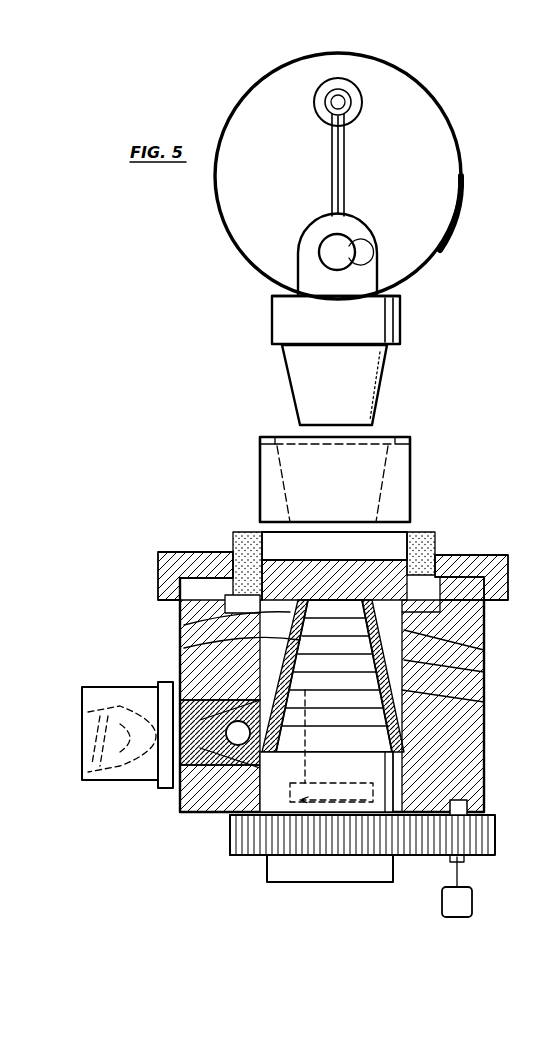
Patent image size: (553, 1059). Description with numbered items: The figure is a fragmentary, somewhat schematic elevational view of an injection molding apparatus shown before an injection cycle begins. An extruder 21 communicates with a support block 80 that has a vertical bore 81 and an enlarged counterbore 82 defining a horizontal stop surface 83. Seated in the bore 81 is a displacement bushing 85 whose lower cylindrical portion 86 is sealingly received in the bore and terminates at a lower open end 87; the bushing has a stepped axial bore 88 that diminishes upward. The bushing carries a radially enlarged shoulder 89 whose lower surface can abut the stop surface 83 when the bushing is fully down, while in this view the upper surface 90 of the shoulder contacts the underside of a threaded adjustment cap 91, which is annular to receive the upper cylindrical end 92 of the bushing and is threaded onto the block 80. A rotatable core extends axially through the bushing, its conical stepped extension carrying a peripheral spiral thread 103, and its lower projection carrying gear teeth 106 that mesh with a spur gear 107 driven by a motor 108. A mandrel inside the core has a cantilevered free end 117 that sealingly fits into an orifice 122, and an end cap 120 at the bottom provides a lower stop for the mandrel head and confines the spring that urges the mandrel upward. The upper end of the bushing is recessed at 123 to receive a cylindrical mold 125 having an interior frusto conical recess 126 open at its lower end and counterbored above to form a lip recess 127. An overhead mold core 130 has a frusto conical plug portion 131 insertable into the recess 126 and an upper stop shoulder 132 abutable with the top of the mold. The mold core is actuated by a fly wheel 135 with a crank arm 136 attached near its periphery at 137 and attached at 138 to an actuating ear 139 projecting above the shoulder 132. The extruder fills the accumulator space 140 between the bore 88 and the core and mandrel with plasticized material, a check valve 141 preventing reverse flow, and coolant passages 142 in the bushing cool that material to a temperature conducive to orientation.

The extruder 21 is at (93, 690).
The support block 80 is at (204, 813).
The vertical bore 81 is at (424, 670).
The enlarged counterbore 82 is at (438, 606).
The horizontal stop surface 83 is at (422, 618).
The displacement bushing 85 is at (426, 540).
The lower cylindrical portion 86 is at (184, 648).
The lower open end 87 is at (434, 702).
The axial bore 88 is at (184, 625).
The radially enlarged shoulder 89 is at (480, 572).
The upper surface 90 is at (214, 553).
The threaded adjustment cap 91 is at (478, 556).
The upper cylindrical end 92 is at (244, 541).
The spiral thread 103 is at (332, 742).
The gear teeth 106 is at (240, 840).
The spur gear 107 is at (496, 836).
The motor 108 is at (473, 898).
The cantilevered free end 117 is at (334, 600).
The end cap 120 is at (322, 870).
The orifice 122 is at (348, 600).
The recess 123 is at (266, 532).
The cylindrical mold 125 is at (410, 452).
The frusto conical recess 126 is at (386, 458).
The lip recess 127 is at (276, 437).
The mold core 130 is at (261, 313).
The frusto conical plug portion 131 is at (378, 369).
The upper stop shoulder 132 is at (400, 319).
The fly wheel 135 is at (258, 102).
The crank arm 136 is at (346, 155).
The attachment point 137 is at (352, 102).
The attachment point 138 is at (326, 246).
The actuating ear 139 is at (356, 230).
The accumulator space 140 is at (424, 650).
The check valve 141 is at (242, 720).
The coolant passages 142 is at (334, 566).